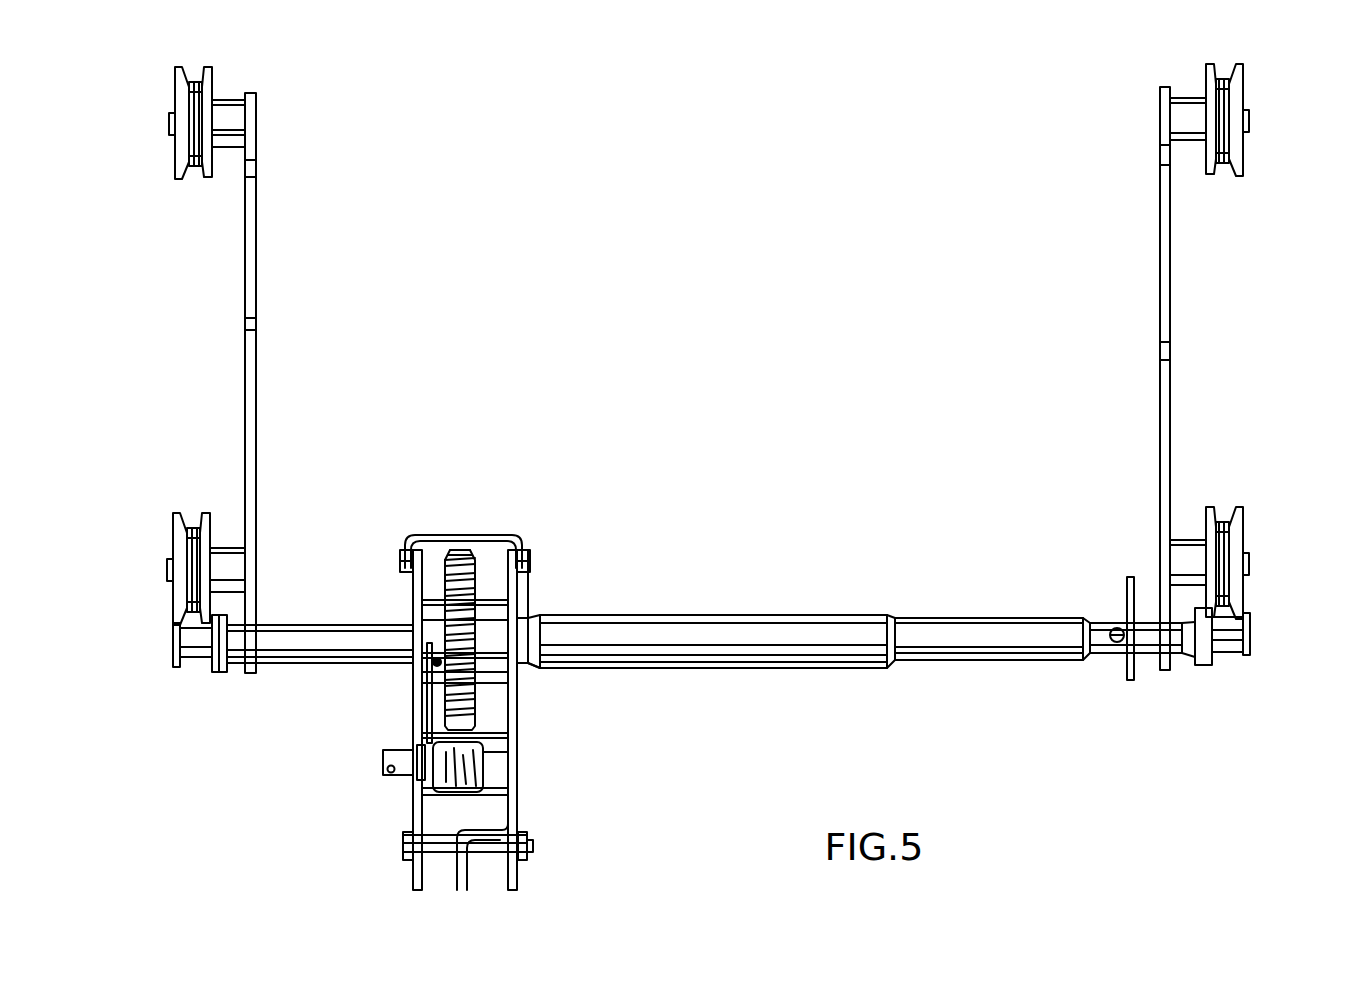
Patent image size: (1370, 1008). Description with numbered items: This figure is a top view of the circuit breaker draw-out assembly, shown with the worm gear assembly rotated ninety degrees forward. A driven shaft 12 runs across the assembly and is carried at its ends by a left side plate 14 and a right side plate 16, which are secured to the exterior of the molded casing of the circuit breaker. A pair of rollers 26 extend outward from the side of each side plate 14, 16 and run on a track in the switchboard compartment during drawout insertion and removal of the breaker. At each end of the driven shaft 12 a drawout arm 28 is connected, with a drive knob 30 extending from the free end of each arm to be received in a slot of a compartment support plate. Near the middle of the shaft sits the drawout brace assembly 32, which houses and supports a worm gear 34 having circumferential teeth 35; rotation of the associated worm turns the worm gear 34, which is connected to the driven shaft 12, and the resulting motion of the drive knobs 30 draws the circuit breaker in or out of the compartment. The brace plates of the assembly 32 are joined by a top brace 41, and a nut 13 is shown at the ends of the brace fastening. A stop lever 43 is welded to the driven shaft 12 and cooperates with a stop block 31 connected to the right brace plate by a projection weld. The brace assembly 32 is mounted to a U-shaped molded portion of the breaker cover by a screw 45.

The driven shaft 12 is at (736, 627).
The nut 13 is at (400, 560).
The left side plate 14 is at (256, 297).
The right side plate 16 is at (1160, 243).
The rollers 26 is at (178, 152).
The drawout arm 28 is at (220, 675).
The drive knob 30 is at (197, 658).
The stop block 31 is at (530, 588).
The drawout brace assembly 32 is at (467, 671).
The worm gear 34 is at (447, 568).
The circumferential teeth 35 is at (460, 548).
The top brace 41 is at (493, 533).
The stop lever 43 is at (532, 664).
The screw 45 is at (403, 845).